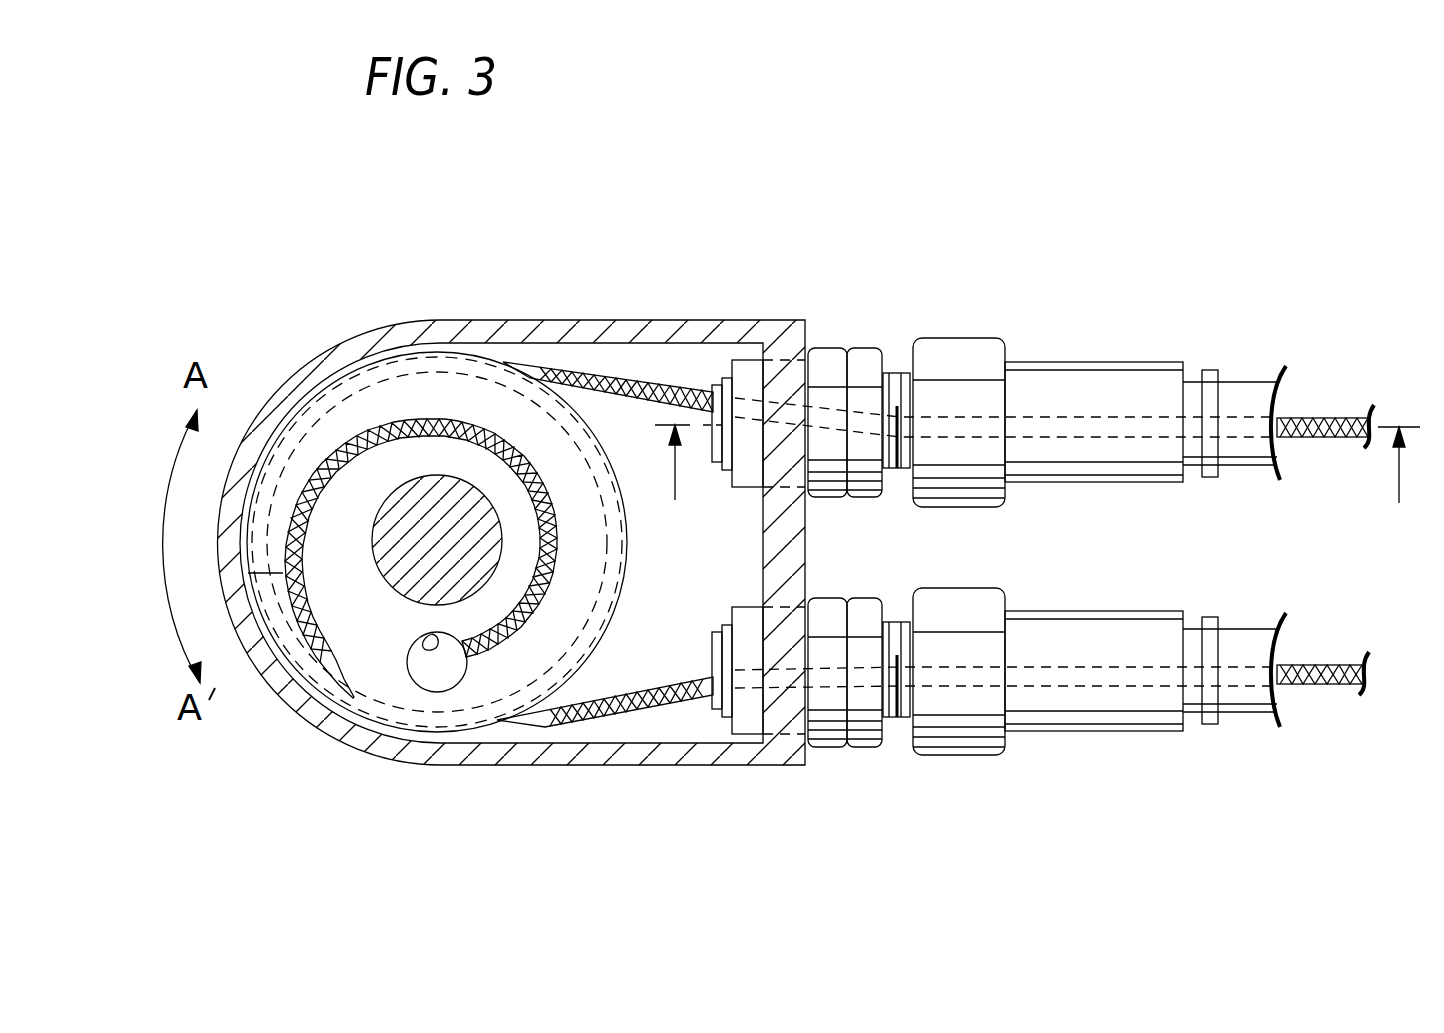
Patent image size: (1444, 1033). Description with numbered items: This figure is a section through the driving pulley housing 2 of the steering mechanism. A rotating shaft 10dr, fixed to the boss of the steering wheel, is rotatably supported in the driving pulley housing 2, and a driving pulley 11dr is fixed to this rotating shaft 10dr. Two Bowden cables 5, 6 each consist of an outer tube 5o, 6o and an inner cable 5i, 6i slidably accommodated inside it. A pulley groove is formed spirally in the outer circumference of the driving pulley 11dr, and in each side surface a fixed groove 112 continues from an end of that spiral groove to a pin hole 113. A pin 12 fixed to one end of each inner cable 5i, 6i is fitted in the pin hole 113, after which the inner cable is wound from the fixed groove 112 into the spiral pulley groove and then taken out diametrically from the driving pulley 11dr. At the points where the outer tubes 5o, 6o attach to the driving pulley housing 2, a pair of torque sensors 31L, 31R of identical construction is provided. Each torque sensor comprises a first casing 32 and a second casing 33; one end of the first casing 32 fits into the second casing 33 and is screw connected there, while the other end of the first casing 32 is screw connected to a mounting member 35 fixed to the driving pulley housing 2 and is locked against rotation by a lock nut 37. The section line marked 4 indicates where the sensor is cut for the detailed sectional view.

The driving pulley housing 2 is at (680, 322).
The mounting member 35 is at (824, 348).
The lock nut 37 is at (862, 348).
The first casing 32 is at (900, 372).
The torque sensor 31L is at (978, 332).
The torque sensor 31R is at (995, 763).
The second casing 33 is at (1082, 362).
The Bowden cable 5 is at (1278, 347).
The outer tube 5o is at (1249, 408).
The inner cable 5i is at (1337, 417).
The Bowden cable 6 is at (1276, 748).
The outer tube 6o is at (1245, 690).
The inner cable 6i is at (1326, 684).
The fixed groove 112 is at (487, 437).
The rotating shaft 10dr is at (378, 553).
The driving pulley 11dr is at (615, 614).
The pin hole 113 is at (425, 645).
The pin 12 is at (455, 678).
The section line 4- 4 is at (1037, 479).